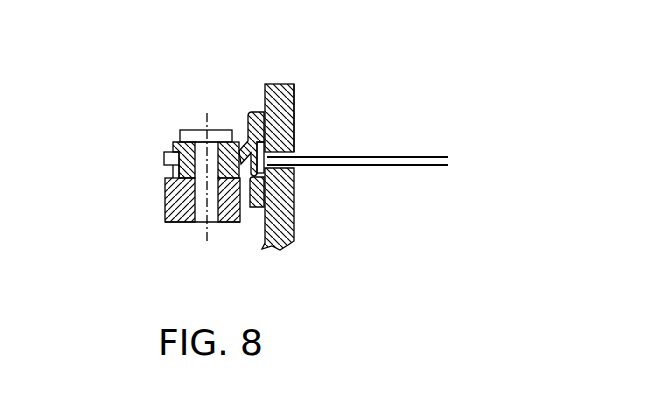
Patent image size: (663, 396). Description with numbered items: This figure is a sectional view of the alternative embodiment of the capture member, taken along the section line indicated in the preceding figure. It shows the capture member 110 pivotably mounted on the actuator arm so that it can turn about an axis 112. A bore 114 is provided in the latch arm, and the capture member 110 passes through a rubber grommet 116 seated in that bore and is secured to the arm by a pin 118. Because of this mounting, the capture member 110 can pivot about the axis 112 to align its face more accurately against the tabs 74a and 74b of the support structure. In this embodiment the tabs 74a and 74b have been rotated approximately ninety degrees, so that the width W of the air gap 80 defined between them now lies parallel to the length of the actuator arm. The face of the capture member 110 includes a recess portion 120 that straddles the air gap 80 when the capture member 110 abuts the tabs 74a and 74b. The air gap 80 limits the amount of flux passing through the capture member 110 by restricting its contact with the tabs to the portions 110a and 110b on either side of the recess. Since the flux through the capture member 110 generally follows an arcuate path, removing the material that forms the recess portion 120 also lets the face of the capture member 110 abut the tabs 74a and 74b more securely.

The tab 74a is at (293, 102).
The tab 74b is at (283, 218).
The air gap 80 is at (290, 154).
The capture member 110 is at (250, 112).
The contact portion 110a is at (282, 90).
The contact portion 110b is at (262, 191).
The axis 112 is at (208, 233).
The bore 114 is at (193, 223).
The rubber grommet 116 is at (170, 142).
The pin 118 is at (185, 130).
The recess portion 120 is at (293, 120).